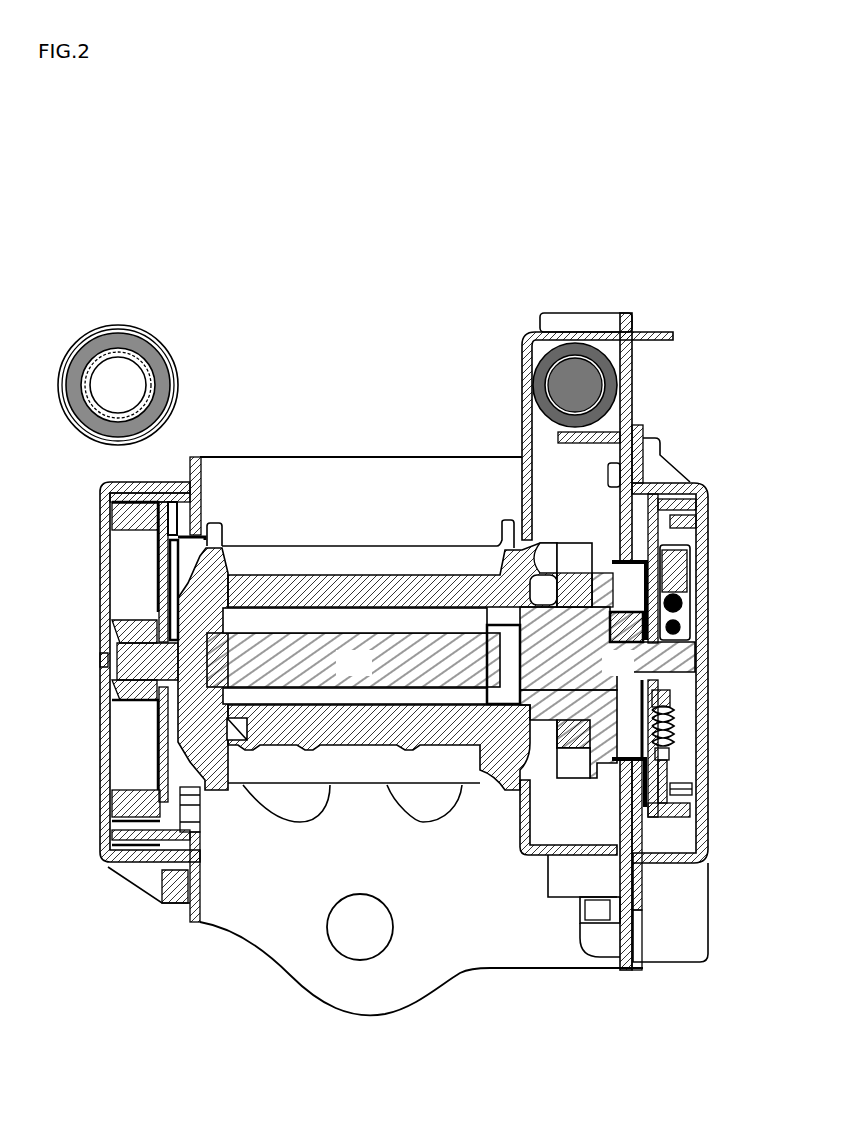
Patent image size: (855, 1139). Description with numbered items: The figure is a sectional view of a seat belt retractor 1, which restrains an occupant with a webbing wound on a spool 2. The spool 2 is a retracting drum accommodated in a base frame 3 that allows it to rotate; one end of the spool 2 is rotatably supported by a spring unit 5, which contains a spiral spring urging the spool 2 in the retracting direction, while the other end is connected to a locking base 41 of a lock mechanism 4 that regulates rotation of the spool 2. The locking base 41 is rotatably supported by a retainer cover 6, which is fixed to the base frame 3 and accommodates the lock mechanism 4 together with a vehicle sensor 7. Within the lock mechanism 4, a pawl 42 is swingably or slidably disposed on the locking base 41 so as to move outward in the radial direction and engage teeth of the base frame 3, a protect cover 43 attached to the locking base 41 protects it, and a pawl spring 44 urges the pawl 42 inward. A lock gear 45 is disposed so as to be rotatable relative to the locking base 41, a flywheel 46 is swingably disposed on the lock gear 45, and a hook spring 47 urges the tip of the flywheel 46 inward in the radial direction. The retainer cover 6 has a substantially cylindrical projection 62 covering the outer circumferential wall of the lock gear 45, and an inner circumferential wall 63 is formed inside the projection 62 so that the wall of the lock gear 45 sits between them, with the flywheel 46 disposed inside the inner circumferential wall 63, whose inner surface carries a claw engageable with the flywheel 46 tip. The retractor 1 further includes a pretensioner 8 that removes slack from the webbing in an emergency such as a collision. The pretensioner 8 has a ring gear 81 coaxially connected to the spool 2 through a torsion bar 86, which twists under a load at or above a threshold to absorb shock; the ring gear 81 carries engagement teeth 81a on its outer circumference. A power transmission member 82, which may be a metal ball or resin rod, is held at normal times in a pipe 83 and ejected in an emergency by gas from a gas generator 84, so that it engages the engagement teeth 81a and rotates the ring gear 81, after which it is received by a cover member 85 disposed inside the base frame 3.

The seat belt retractor 1 is at (134, 243).
The spool 2 is at (352, 573).
The base frame 3 is at (348, 457).
The lock mechanism 4 is at (724, 494).
The spring unit 5 is at (84, 563).
The retainer cover 6 is at (708, 527).
The vehicle sensor 7 is at (580, 927).
The pretensioner 8 is at (502, 330).
The locking base 41 is at (631, 673).
The pawl 42 is at (606, 628).
The protect cover 43 is at (638, 558).
The pawl spring 44 is at (680, 718).
The lock gear 45 is at (660, 768).
The flywheel 46 is at (690, 568).
The hook spring 47 is at (684, 604).
The projection 62 is at (665, 864).
The inner circumferential wall 63 is at (680, 783).
The ring gear 81 is at (575, 750).
The engagement teeth 81a is at (575, 546).
The power transmission member 82 is at (555, 384).
The pipe 83 is at (620, 385).
The gas generator 84 is at (178, 385).
The cover member 85 is at (520, 475).
The torsion bar 86 is at (374, 673).